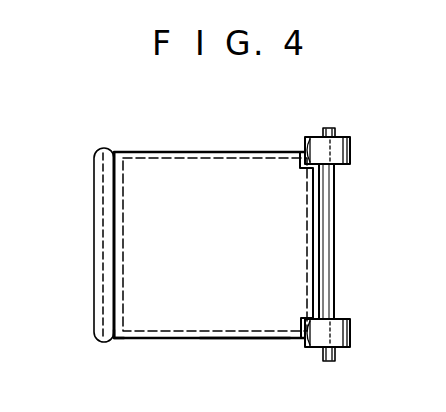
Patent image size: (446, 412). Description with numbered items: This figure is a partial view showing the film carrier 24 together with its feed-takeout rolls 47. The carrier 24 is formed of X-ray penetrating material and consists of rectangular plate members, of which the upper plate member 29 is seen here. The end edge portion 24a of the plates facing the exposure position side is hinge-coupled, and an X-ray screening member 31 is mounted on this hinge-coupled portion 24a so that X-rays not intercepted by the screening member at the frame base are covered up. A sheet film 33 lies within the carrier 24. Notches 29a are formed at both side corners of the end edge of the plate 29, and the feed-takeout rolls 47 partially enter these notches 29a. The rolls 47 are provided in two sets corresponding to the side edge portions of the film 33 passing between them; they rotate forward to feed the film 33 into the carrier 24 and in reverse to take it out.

The carrier 24 is at (174, 178).
The hinge-coupled edge portion 24a is at (120, 344).
The rectangular plate member 29 is at (242, 318).
The notch 29a is at (308, 145).
The X-ray screening member 31 is at (95, 162).
The sheet film 33 is at (242, 157).
The feed-takeout roll 47 is at (350, 143).